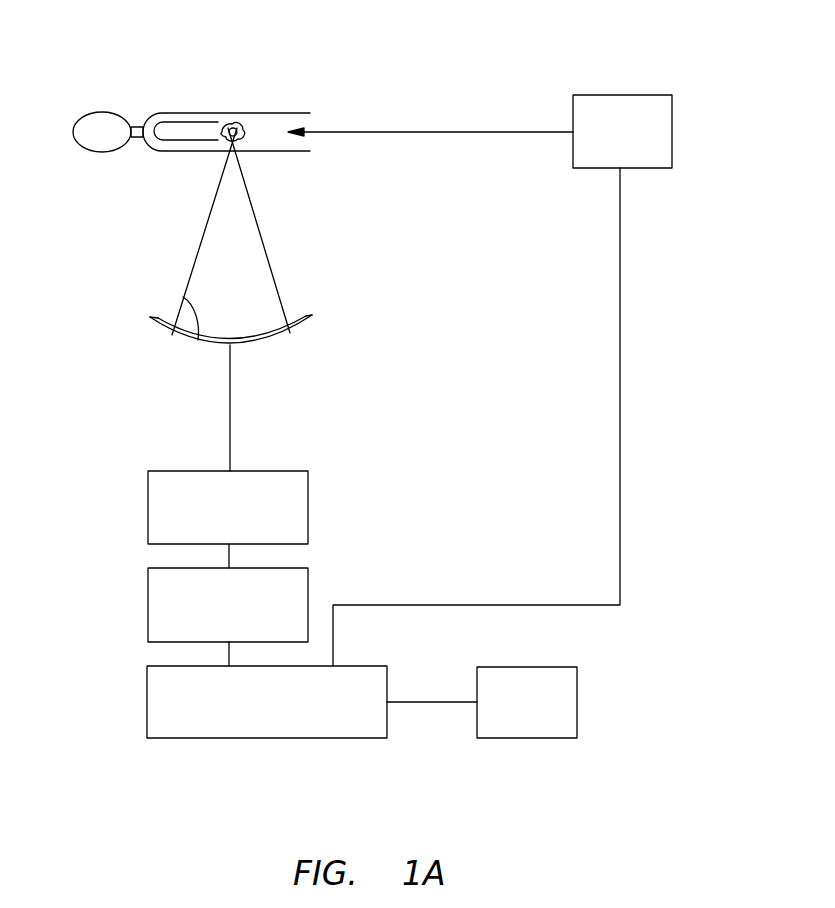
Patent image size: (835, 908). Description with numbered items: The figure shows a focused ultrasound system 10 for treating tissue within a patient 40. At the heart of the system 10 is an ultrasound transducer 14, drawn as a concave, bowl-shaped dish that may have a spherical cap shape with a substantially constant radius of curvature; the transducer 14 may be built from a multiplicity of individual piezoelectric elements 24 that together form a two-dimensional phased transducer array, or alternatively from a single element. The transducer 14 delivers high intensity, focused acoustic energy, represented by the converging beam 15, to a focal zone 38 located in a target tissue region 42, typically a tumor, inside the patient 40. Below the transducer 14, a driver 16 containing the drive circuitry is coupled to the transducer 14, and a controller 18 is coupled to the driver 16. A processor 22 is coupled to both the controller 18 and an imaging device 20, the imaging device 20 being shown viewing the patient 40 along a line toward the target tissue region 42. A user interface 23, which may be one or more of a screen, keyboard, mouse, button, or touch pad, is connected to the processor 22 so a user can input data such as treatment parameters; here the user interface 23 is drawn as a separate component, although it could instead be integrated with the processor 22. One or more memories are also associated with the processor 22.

The focused ultrasound system 10 is at (443, 44).
The ultrasound transducer 14 is at (298, 333).
The beam 15 is at (262, 232).
The driver 16 is at (310, 508).
The controller 18 is at (148, 607).
The imaging device 20 is at (620, 95).
The processor 22 is at (357, 666).
The user interface 23 is at (577, 702).
The piezoelectric elements 24 is at (183, 297).
The focal zone 38 is at (230, 125).
The patient 40 is at (200, 112).
The target tissue region 42 is at (243, 130).